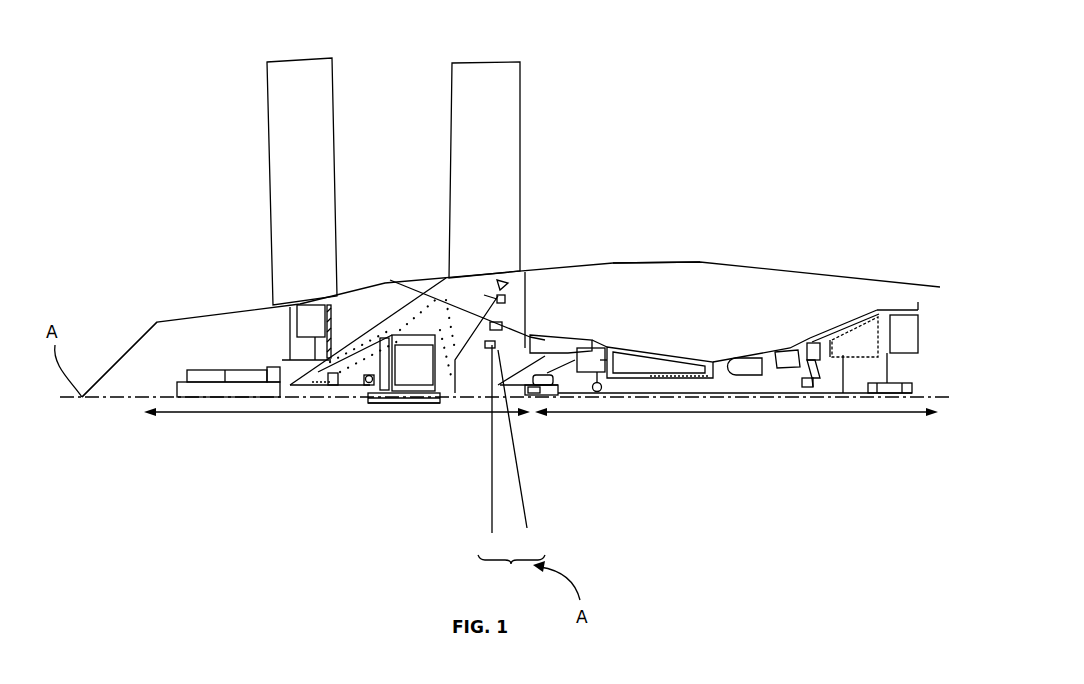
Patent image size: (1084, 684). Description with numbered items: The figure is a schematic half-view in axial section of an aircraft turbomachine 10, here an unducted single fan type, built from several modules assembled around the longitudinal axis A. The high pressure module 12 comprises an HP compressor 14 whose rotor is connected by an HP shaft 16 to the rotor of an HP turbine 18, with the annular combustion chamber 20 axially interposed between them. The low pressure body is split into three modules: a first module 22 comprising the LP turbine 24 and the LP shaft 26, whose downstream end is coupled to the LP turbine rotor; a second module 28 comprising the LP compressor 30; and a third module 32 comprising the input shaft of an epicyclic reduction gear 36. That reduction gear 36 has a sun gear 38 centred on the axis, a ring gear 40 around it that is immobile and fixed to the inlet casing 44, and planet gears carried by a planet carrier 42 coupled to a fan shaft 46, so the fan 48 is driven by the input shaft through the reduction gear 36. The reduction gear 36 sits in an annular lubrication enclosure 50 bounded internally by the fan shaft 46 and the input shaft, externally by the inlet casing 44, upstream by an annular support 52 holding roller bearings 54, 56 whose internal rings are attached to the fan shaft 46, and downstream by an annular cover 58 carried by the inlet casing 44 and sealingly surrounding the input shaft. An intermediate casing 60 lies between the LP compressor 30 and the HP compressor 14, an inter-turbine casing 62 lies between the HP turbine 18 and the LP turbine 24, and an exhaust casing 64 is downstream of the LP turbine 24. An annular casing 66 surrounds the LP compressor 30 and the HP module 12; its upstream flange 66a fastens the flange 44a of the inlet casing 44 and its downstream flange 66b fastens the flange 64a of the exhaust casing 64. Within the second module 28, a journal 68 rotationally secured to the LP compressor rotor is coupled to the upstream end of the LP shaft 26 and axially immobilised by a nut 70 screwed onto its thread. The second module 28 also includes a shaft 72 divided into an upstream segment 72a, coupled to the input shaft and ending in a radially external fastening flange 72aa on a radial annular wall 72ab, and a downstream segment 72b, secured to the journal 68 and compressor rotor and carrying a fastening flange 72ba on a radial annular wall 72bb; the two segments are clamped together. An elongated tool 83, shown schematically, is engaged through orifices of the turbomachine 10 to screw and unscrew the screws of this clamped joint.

The turbomachine 10 is at (660, 153).
The HP module 12 is at (785, 367).
The HP compressor 14 is at (635, 345).
The HP shaft 16 is at (715, 355).
The HP turbine 18 is at (788, 355).
The annular combustion chamber 20 is at (750, 355).
The first module of the LP body 22 is at (867, 350).
The LP turbine 24 is at (857, 345).
The LP shaft 26 is at (640, 395).
The second module of the LP body 28 is at (543, 330).
The LP compressor 30 is at (537, 338).
The third module of the LP body 32 is at (442, 403).
The reduction gear 36 is at (402, 373).
The sun gear 38 is at (415, 390).
The ring gear 40 is at (410, 335).
The planet carrier 42 is at (332, 378).
The inlet casing 44 is at (428, 318).
The annular flange of the inlet casing 44a is at (520, 303).
The fan shaft 46 is at (300, 382).
The fan 48 is at (277, 215).
The lubrication enclosure 50 is at (440, 362).
The annular support 52 is at (348, 330).
The roller bearing 54 is at (317, 382).
The roller bearing 56 is at (366, 380).
The annular cover 58 is at (440, 300).
The intermediate casing 60 is at (593, 347).
The inter-turbine casing 62 is at (810, 340).
The exhaust casing 64 is at (913, 327).
The annular flange of the exhaust casing 64a is at (812, 382).
The annular casing 66 is at (660, 345).
The upstream annular flange 66a is at (527, 340).
The downstream annular flange 66b is at (819, 333).
The journal 68 is at (520, 395).
The nut 70 is at (540, 392).
The shaft 72 is at (511, 569).
The upstream segment 72a is at (496, 450).
The downstream segment 72b is at (521, 452).
The radially external fastening flange 72aa is at (455, 330).
The radial annular wall 72ab is at (490, 344).
The radially external fastening flange 72ba is at (484, 295).
The radial annular wall 72bb is at (490, 297).
The tool 83 is at (487, 300).